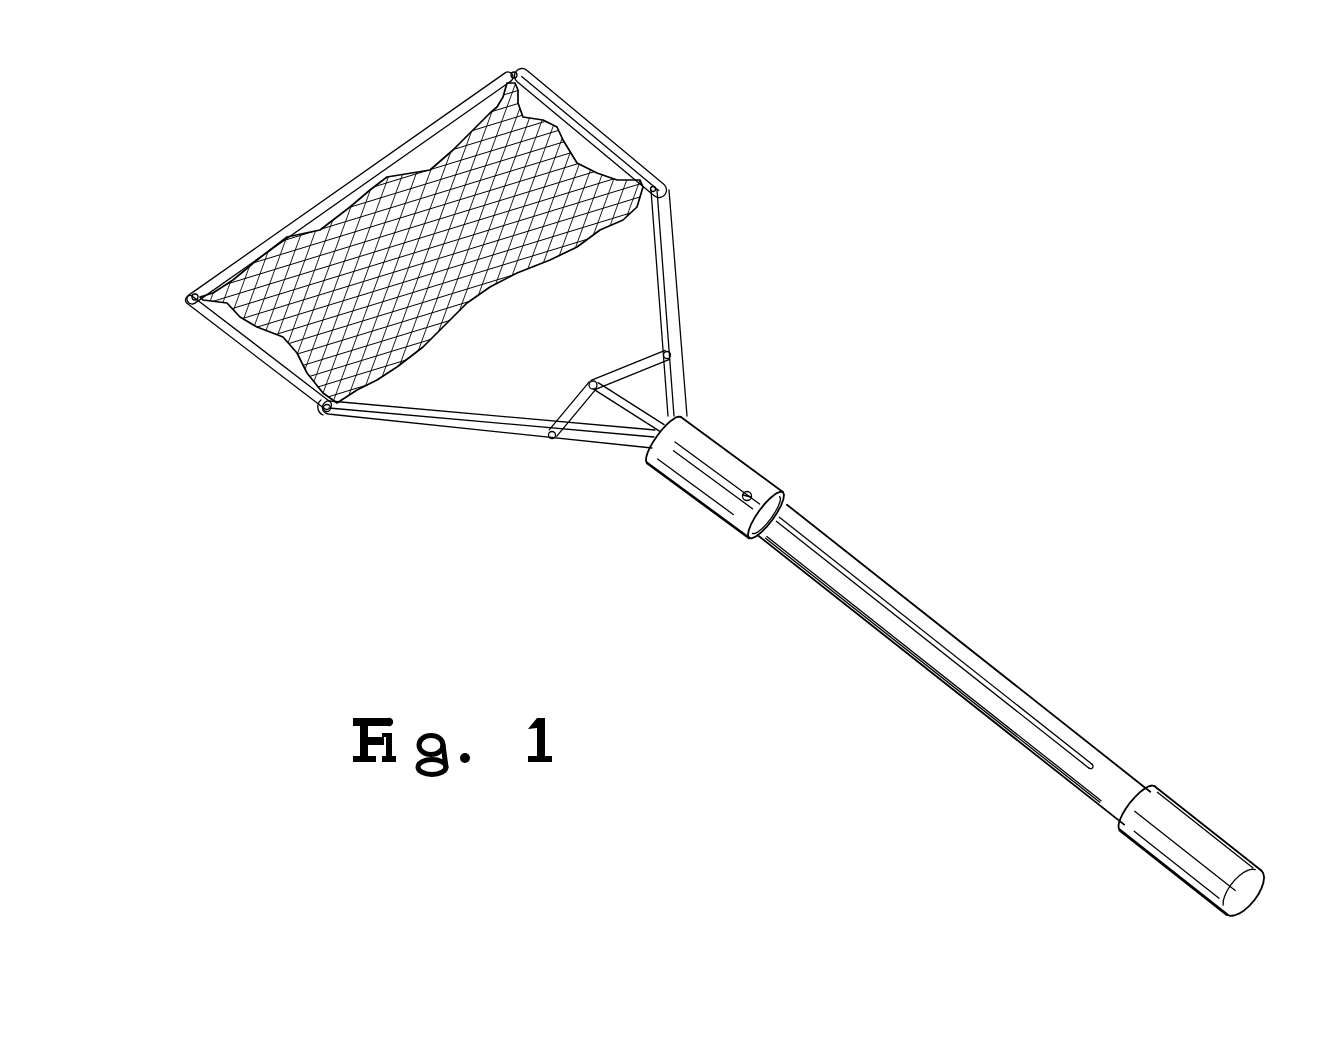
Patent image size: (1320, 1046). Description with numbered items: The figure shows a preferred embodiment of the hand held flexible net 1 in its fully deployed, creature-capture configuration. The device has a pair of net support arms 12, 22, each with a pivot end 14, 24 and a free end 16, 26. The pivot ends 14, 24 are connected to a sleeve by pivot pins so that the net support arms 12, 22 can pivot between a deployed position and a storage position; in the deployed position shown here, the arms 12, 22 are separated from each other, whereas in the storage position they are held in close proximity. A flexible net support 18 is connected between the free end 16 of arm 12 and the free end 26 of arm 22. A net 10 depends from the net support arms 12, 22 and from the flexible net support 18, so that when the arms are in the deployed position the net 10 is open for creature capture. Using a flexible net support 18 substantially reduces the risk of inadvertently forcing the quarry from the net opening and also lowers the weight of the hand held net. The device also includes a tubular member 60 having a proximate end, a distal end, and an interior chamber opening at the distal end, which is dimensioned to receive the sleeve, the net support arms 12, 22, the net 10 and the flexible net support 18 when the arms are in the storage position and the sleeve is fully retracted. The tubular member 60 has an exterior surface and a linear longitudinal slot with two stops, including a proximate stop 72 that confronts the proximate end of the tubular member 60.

The hand held flexible net 1 is at (532, 559).
The net 10 is at (487, 290).
The net support arm 12 is at (306, 425).
The pivot end 14 is at (606, 461).
The free end 16 is at (163, 302).
The flexible net support 18 is at (333, 190).
The net support arm 22 is at (682, 172).
The pivot end 24 is at (706, 404).
The free end 26 is at (559, 64).
The tubular member 60 is at (1011, 710).
The proximate stop 72 is at (1090, 767).